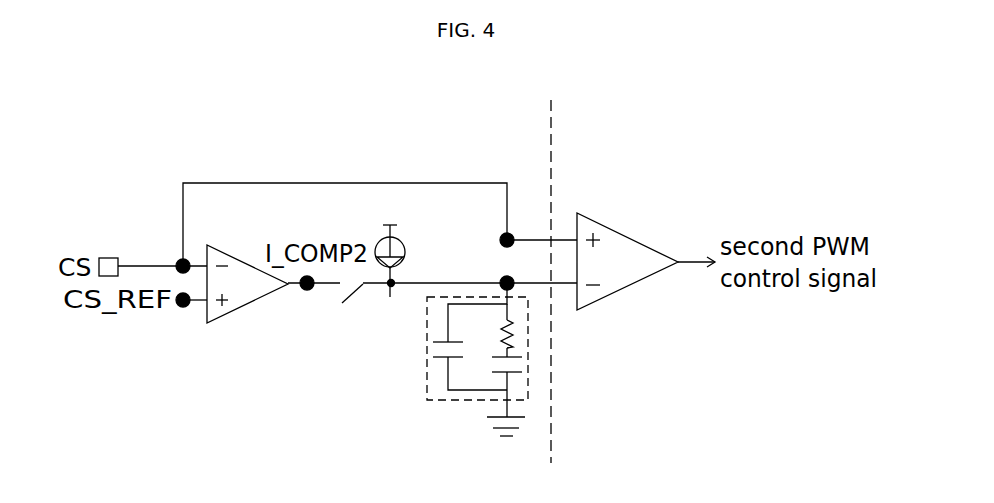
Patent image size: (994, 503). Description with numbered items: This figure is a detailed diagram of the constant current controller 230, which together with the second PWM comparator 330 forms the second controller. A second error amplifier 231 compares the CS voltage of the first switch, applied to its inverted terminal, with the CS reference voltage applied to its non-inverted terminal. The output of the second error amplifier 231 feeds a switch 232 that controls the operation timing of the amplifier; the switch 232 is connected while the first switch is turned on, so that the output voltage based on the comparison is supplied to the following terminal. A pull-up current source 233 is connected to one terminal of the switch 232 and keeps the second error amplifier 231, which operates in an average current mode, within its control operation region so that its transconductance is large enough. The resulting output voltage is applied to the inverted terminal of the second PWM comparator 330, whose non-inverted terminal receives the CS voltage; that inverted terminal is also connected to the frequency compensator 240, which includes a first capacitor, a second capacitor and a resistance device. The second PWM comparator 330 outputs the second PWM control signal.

The constant current controller 230 is at (384, 131).
The second error amplifier 231 is at (245, 305).
The switch 232 is at (357, 290).
The pull-up current source 233 is at (405, 253).
The frequency compensator 240 is at (435, 403).
The second PWM comparator 330 is at (627, 237).